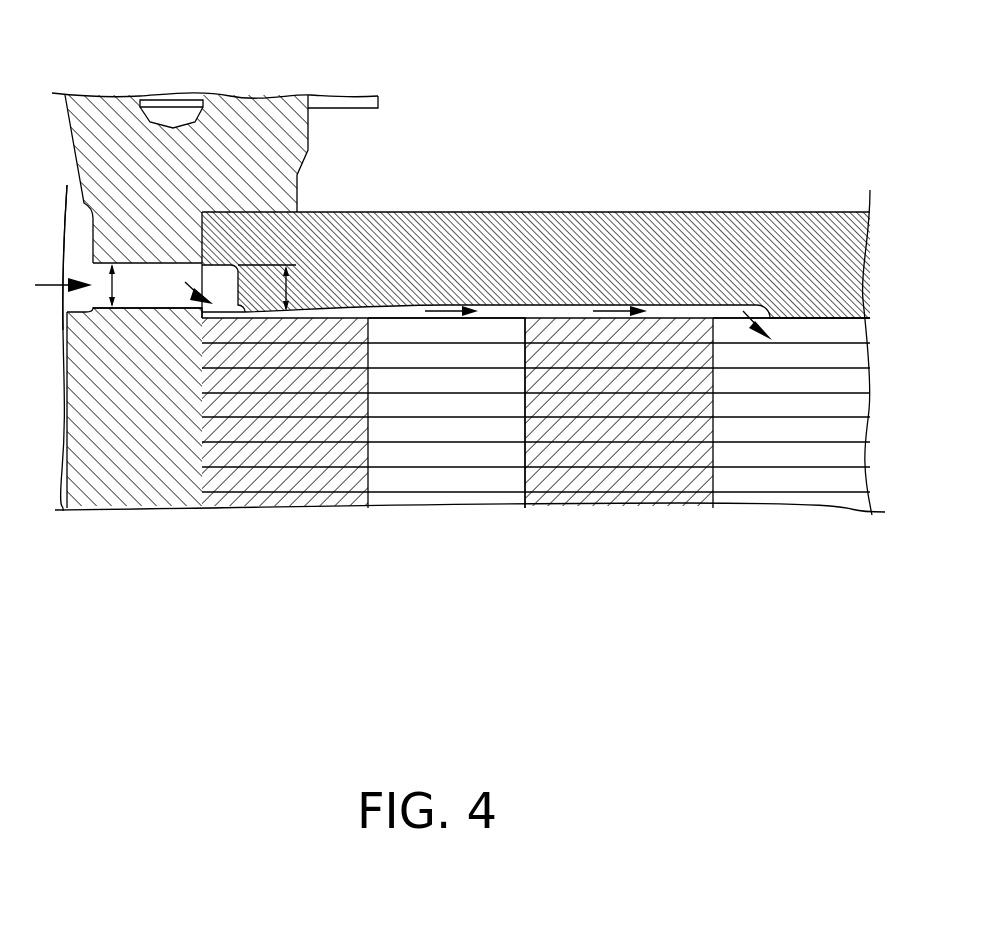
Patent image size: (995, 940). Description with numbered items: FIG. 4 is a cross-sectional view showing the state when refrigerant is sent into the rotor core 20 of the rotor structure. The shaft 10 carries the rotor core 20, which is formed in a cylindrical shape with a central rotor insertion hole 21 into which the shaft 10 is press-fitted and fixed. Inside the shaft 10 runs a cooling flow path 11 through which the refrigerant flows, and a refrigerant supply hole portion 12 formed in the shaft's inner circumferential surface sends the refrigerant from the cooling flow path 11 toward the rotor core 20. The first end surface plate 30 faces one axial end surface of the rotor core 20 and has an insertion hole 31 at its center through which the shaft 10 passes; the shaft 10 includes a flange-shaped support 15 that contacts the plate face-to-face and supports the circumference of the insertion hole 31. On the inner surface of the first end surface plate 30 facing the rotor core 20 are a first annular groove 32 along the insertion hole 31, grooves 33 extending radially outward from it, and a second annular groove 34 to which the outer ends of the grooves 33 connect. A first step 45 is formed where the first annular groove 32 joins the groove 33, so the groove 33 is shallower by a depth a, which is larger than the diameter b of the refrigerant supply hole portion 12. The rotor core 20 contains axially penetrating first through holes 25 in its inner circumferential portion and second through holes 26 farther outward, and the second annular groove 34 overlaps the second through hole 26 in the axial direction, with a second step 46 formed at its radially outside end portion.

The shaft 10 is at (113, 423).
The cooling flow path 11 is at (78, 238).
The refrigerant supply hole portion 12 is at (150, 277).
The support 15 is at (301, 178).
The rotor core 20 is at (625, 455).
The rotor insertion hole 21 is at (202, 430).
The first through holes 25 is at (370, 428).
The second through holes 26 is at (713, 428).
The first end surface plate 30 is at (473, 237).
The insertion hole 31 is at (183, 222).
The first annular groove 32 is at (207, 263).
The grooves 33 is at (312, 312).
The second annular groove 34 is at (550, 310).
The first step 45 is at (233, 262).
The second step 46 is at (767, 315).